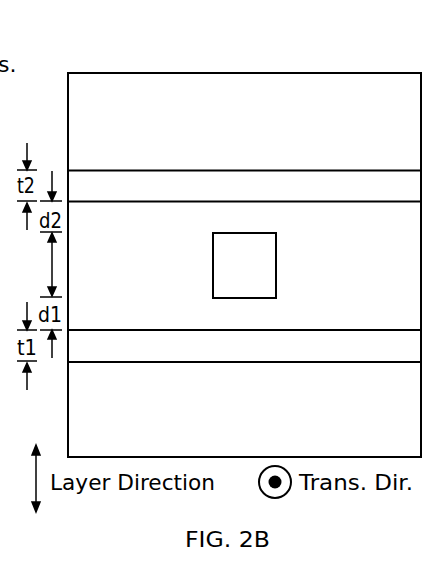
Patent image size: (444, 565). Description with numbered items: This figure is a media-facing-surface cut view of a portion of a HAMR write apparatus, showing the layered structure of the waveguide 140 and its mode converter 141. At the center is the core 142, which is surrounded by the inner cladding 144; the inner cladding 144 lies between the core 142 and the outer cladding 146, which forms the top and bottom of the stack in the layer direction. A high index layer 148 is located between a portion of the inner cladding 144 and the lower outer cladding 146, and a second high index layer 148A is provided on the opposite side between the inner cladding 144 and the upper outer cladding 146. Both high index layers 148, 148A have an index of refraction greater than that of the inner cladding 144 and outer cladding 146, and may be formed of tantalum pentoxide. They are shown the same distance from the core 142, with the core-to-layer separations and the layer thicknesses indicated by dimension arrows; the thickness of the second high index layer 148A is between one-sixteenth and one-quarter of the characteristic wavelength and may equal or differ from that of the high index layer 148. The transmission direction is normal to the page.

The waveguide 140 is at (292, 37).
The mode converter 141 is at (244, 235).
The core 142 is at (244, 265).
The inner cladding 144 is at (133, 273).
The outer cladding 146 is at (244, 266).
The high index layer 148 is at (244, 344).
The second high index layer 148A is at (244, 188).